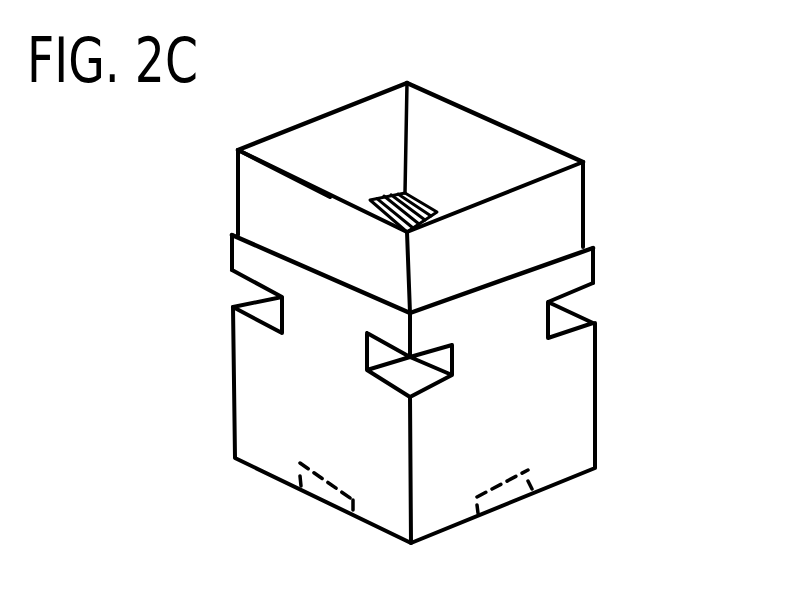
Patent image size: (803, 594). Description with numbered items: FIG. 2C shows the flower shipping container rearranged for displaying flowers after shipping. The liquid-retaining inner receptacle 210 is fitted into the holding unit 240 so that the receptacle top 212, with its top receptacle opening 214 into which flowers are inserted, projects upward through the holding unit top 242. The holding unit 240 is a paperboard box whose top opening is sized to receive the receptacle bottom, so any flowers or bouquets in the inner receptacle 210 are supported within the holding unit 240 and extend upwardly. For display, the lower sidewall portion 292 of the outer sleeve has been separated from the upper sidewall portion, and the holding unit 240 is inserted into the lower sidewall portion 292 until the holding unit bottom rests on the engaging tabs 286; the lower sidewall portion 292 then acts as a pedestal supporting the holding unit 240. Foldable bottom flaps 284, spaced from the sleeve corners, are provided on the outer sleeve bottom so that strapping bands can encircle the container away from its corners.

The inner receptacle 210 is at (452, 130).
The receptacle top 212 is at (360, 105).
The top receptacle opening 214 is at (322, 156).
The holding unit 240 is at (560, 200).
The holding unit top 242 is at (355, 103).
The bottom flaps 284 is at (507, 490).
The engaging tabs 286 is at (445, 352).
The lower sidewall portion 292 is at (560, 421).